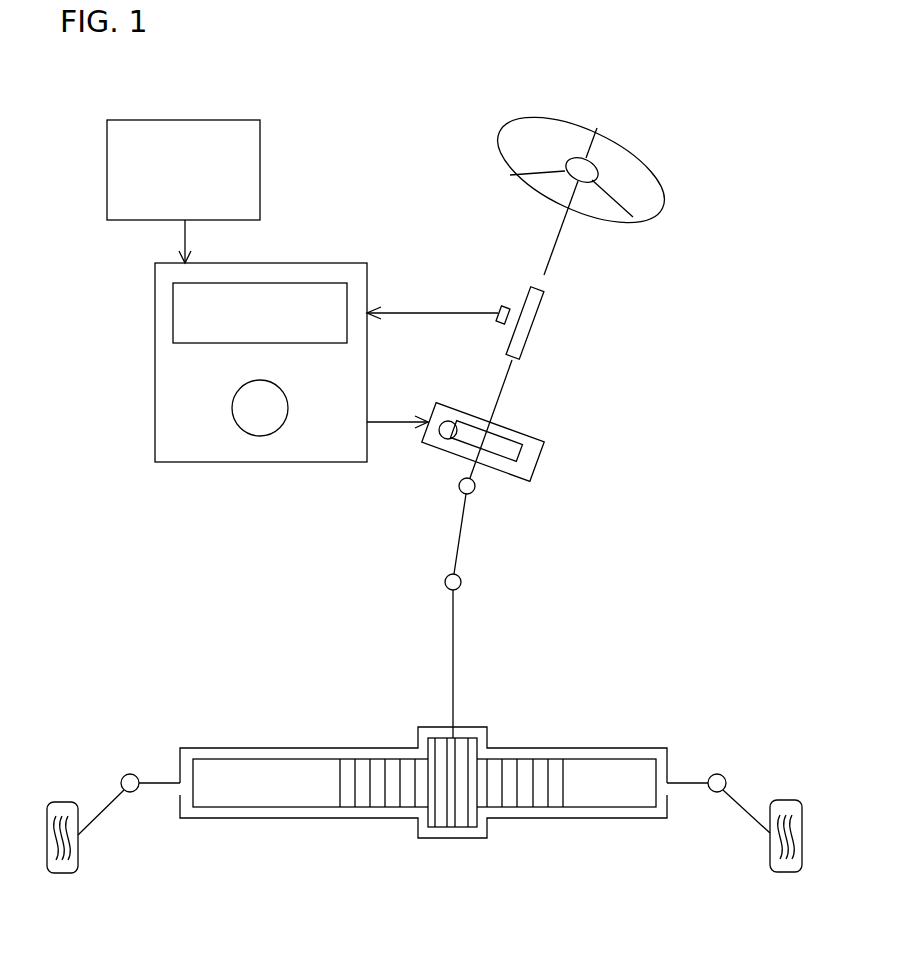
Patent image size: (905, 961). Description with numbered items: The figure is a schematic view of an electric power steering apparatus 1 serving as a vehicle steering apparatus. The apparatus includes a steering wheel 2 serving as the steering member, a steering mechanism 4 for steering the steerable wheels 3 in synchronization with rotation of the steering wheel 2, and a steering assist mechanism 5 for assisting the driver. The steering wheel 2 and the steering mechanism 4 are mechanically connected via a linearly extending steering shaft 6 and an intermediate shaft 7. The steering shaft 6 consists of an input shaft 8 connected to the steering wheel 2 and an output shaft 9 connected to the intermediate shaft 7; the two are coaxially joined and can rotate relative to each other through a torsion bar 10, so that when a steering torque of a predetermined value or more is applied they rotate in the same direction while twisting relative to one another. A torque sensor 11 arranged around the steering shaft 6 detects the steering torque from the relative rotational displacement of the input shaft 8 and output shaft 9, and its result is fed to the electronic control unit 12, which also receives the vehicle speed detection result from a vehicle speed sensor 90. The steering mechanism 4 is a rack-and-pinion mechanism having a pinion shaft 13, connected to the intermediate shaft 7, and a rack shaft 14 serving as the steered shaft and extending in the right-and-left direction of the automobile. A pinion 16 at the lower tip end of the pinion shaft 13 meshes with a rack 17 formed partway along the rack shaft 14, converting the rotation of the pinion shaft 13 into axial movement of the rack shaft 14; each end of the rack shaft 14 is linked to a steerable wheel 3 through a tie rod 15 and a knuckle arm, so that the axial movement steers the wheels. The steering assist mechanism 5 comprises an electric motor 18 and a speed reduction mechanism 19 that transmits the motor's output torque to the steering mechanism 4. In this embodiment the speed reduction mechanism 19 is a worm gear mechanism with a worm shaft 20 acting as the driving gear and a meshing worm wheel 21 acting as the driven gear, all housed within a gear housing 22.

The electric power steering apparatus 1 is at (350, 160).
The steering wheel 2 is at (580, 120).
The steerable wheels 3 is at (63, 802).
The steering mechanism 4 is at (617, 735).
The steering assist mechanism 5 is at (333, 512).
The steering shaft 6 is at (565, 238).
The intermediate shaft 7 is at (462, 548).
The input shaft 8 is at (548, 272).
The output shaft 9 is at (507, 383).
The torsion bar 10 is at (528, 328).
The torque sensor 11 is at (497, 306).
The electronic control unit (ECU) 12 is at (310, 295).
The pinion shaft 13 is at (458, 663).
The rack shaft 14 is at (606, 812).
The tie rod 15 is at (105, 810).
The pinion 16 is at (452, 820).
The rack 17 is at (363, 808).
The electric motor 18 is at (260, 436).
The speed reduction mechanism 19 is at (556, 431).
The worm shaft 20 is at (440, 436).
The worm wheel 21 is at (512, 453).
The gear housing 22 is at (502, 478).
The vehicle speed sensor 90 is at (172, 120).